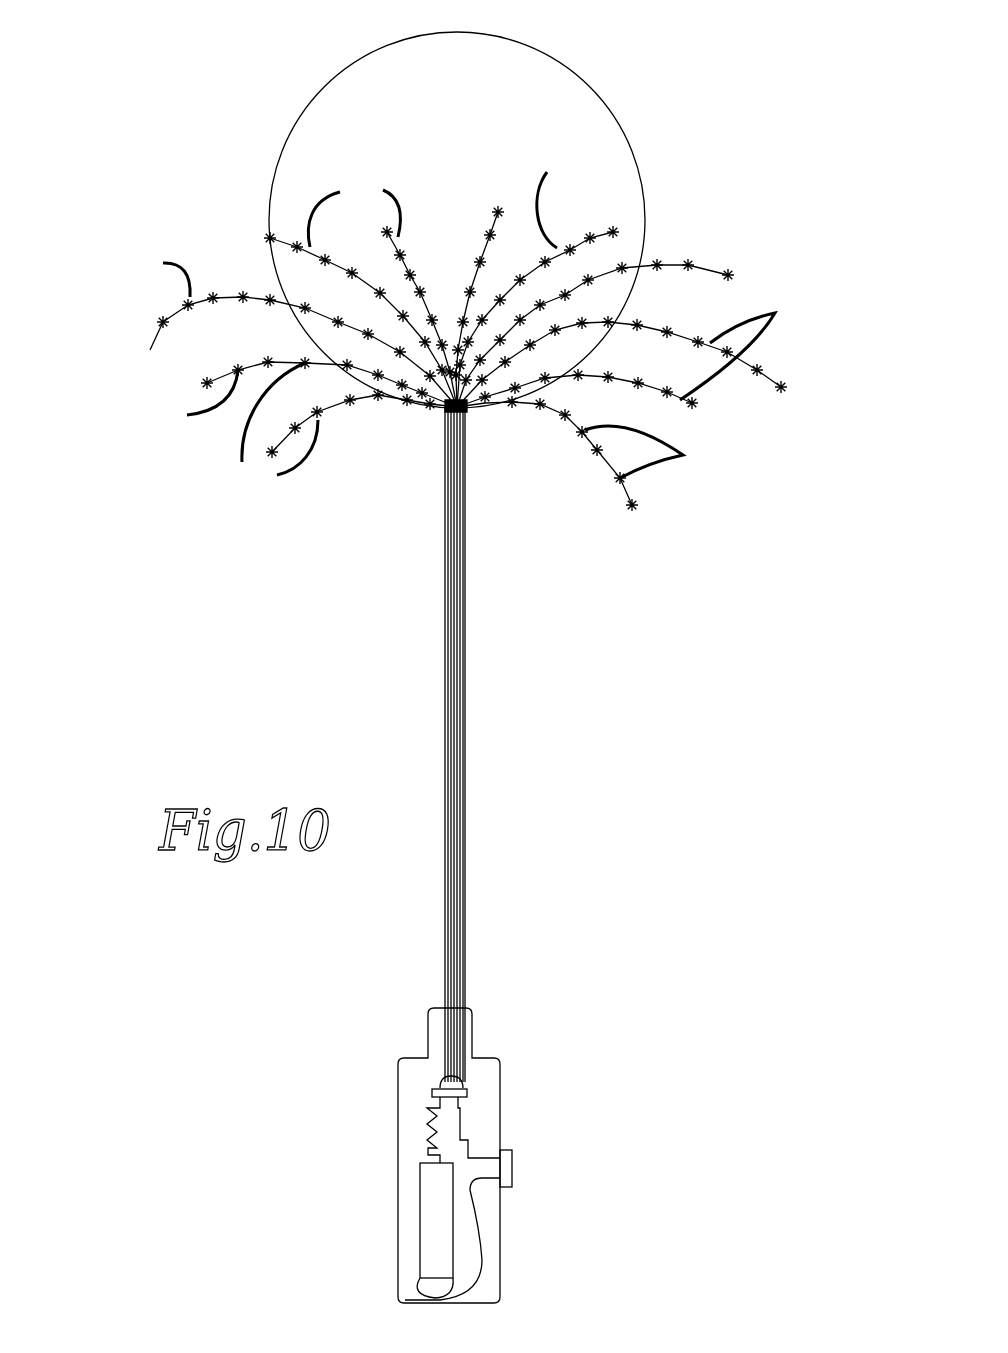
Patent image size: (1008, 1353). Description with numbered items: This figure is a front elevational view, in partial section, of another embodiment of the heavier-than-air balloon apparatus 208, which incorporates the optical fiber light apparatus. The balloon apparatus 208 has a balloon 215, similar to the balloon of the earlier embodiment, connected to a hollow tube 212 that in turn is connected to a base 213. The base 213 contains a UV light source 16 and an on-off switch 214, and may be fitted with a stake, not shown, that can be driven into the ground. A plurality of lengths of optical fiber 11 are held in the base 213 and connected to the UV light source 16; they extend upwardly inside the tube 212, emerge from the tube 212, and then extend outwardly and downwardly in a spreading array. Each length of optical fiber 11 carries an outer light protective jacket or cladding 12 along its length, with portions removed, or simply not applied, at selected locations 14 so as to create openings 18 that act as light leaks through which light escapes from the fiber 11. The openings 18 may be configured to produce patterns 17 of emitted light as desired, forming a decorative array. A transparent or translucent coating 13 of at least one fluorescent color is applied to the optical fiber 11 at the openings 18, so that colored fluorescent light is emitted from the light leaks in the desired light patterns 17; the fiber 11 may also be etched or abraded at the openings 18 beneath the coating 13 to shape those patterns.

The balloon apparatus 208 is at (138, 116).
The balloon 215 is at (592, 82).
The optical fiber 11 is at (487, 215).
The outer jacket or cladding 12 is at (615, 468).
The transparent or translucent coating 13 is at (267, 237).
The selected locations 14 is at (273, 236).
The patterns of light 17 is at (596, 210).
The openings 18 is at (272, 236).
The hollow tube 212 is at (466, 585).
The base 213 is at (500, 1062).
The on-off switch 214 is at (512, 1168).
The UV light source 16 is at (432, 1215).